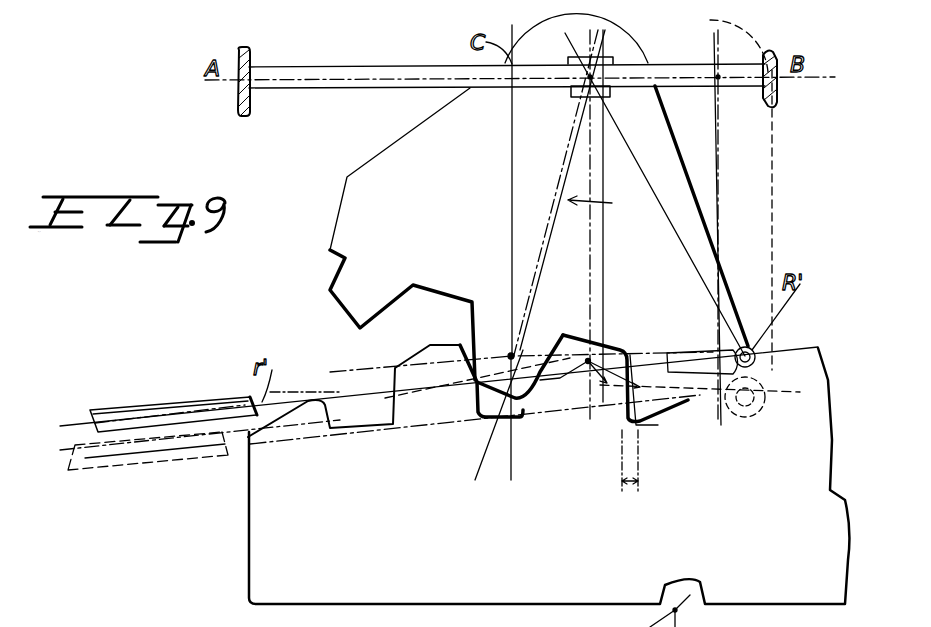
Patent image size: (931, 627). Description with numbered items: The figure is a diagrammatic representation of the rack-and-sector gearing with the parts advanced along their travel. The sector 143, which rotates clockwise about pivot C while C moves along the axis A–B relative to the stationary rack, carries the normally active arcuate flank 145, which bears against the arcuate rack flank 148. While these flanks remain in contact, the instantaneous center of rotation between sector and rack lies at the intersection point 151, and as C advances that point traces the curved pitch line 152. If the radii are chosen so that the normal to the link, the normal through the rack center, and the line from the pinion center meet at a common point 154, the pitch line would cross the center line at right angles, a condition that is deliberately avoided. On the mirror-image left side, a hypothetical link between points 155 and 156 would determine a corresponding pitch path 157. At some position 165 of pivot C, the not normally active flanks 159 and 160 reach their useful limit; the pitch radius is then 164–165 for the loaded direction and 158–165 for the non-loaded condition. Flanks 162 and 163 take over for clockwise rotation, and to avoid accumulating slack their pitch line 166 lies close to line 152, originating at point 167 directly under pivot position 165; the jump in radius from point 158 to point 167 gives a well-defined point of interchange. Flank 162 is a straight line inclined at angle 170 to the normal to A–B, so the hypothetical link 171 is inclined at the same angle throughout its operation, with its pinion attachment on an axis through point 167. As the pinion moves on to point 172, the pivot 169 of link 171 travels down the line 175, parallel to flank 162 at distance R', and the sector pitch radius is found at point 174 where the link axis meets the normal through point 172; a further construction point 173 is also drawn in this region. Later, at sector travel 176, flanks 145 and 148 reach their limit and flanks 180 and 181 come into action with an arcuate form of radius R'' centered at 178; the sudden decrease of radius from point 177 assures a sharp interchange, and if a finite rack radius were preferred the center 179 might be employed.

The sector 143 is at (397, 138).
The arcuate flank 145 is at (566, 350).
The arcuate flank 148 is at (534, 418).
The intersection point 151 is at (511, 354).
The pitch line 152 is at (556, 330).
The meeting point 154 is at (680, 611).
The point 155 is at (386, 386).
The point 156 is at (700, 343).
The pitch path 157 is at (462, 366).
The point 158 is at (580, 355).
The tooth flank 159 is at (473, 398).
The tooth flank 160 is at (470, 308).
The flank 162 is at (632, 395).
The flank 163 is at (690, 428).
The point 164 is at (588, 364).
The pivot position 165 is at (605, 57).
The pitch line 166 is at (630, 380).
The point 167 is at (603, 345).
The pivot 169 is at (760, 350).
The angle 170 is at (725, 197).
The hypothetical link 171 is at (212, 377).
The point 172 is at (719, 76).
The stop 173 is at (752, 413).
The point 174 is at (688, 425).
The line 175 is at (768, 425).
The sector travel 176 is at (612, 76).
The pitch radius point 177 is at (607, 383).
The center 178 is at (690, 336).
The center 179 is at (828, 483).
The flank 180 is at (695, 420).
The flank 181 is at (328, 398).